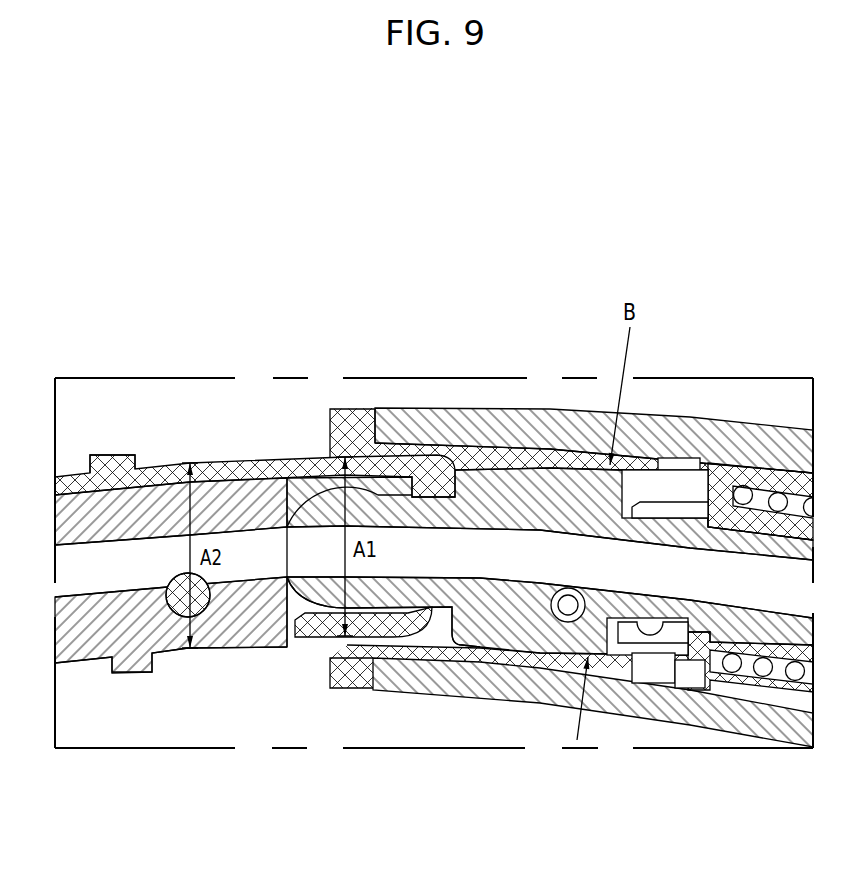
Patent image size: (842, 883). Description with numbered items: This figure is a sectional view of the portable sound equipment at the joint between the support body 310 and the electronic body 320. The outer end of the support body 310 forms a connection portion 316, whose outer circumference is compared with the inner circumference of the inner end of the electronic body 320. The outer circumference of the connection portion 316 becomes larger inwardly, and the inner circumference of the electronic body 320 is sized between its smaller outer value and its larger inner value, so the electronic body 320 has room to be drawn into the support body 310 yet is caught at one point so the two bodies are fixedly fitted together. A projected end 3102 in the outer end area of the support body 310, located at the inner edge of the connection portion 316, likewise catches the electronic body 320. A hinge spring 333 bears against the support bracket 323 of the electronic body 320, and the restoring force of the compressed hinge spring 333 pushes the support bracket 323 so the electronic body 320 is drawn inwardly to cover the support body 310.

The support body 310 is at (202, 450).
The projected end 3102 is at (119, 455).
The connection portion 316 is at (267, 503).
The electronic body 320 is at (462, 404).
The support bracket 323 is at (352, 432).
The hinge spring 333 is at (776, 495).